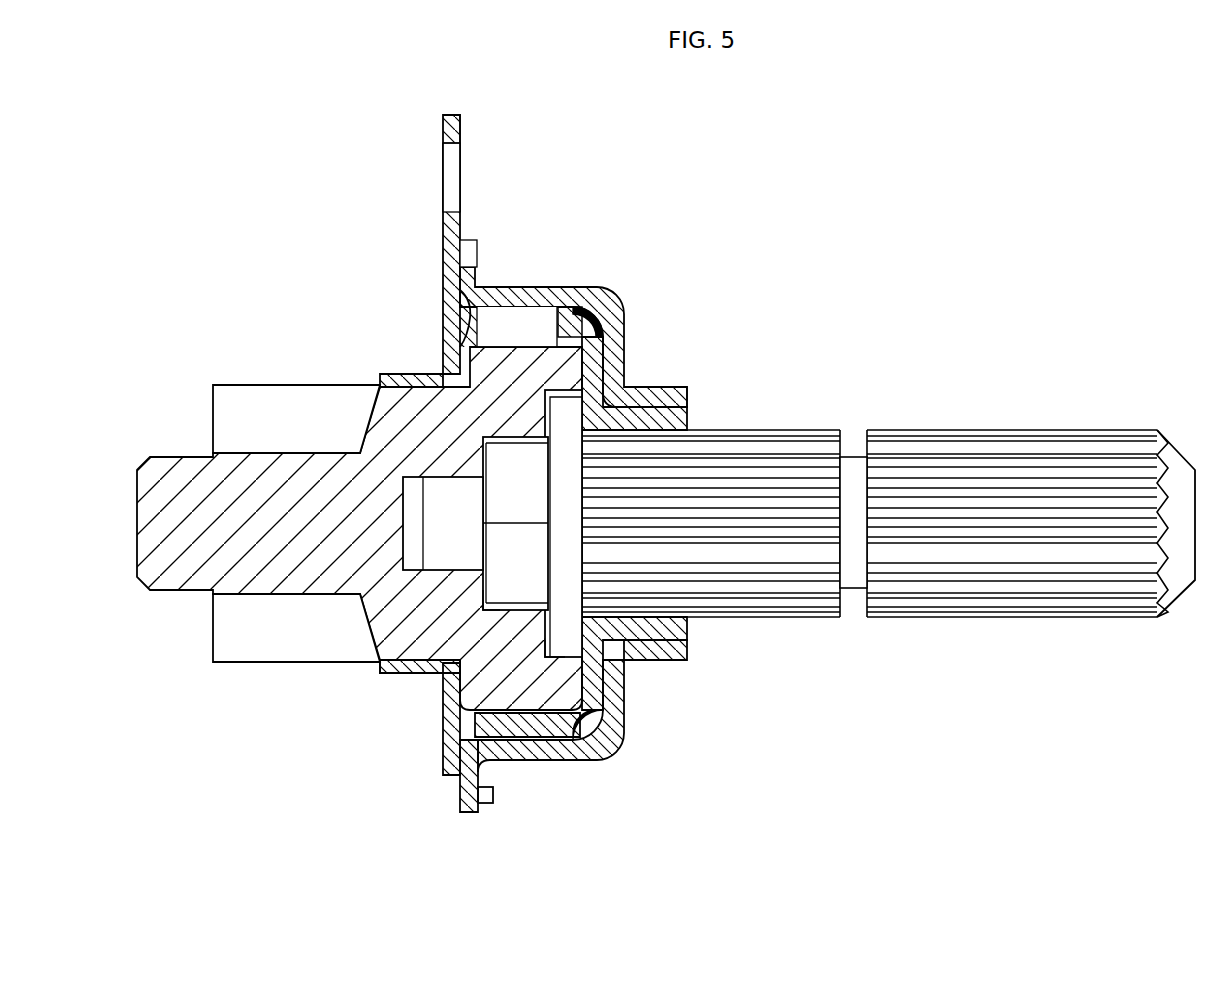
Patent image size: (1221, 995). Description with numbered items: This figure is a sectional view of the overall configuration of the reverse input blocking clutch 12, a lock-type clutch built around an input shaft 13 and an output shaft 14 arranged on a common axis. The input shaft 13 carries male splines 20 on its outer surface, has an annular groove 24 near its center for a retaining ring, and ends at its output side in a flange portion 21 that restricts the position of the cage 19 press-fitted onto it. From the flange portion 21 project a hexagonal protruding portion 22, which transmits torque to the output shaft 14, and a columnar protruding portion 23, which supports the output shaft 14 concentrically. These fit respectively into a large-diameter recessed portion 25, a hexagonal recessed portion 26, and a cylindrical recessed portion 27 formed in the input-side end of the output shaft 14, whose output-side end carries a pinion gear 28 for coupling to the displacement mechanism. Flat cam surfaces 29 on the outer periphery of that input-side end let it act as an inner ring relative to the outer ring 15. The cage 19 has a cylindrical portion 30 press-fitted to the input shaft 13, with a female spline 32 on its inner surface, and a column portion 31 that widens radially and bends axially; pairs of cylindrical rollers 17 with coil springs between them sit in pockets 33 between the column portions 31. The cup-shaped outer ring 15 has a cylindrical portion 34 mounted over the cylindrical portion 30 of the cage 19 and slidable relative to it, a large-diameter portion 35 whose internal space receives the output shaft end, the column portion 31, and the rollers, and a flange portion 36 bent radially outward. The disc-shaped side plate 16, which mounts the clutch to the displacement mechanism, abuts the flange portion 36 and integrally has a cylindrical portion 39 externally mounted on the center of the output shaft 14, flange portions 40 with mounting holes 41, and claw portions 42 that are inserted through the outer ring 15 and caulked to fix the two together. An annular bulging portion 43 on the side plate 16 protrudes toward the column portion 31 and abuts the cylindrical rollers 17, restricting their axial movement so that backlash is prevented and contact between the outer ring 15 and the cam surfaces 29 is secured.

The reverse input blocking clutch 12 is at (820, 250).
The input shaft 13 is at (1006, 622).
The output shaft 14 is at (248, 385).
The outer ring 15 is at (612, 750).
The side plate 16 is at (441, 125).
The cylindrical rollers 17 is at (512, 310).
The cage 19 is at (596, 312).
The male splines 20 is at (1005, 440).
The flange portion 21 is at (565, 460).
The hexagonal protruding portion 22 is at (505, 468).
The columnar protruding portion 23 is at (440, 537).
The annular groove 24 is at (855, 455).
The large-diameter recessed portion 25 is at (565, 648).
The hexagonal recessed portion 26 is at (495, 603).
The cylindrical recessed portion 27 is at (410, 478).
The pinion gear 28 is at (287, 645).
The cam surfaces 29 is at (530, 340).
The cylindrical portion 30 is at (652, 630).
The column portion 31 is at (520, 727).
The female spline 32 is at (668, 437).
The pocket 33 is at (553, 308).
The cylindrical portion 34 is at (650, 397).
The large-diameter portion 35 is at (555, 750).
The flange portion 36 is at (465, 795).
The cylindrical portion 39 is at (404, 667).
The flange portions 40 is at (461, 126).
The mounting holes 41 is at (445, 178).
The claw portions 42 is at (487, 805).
The bulging portion 43 is at (460, 317).